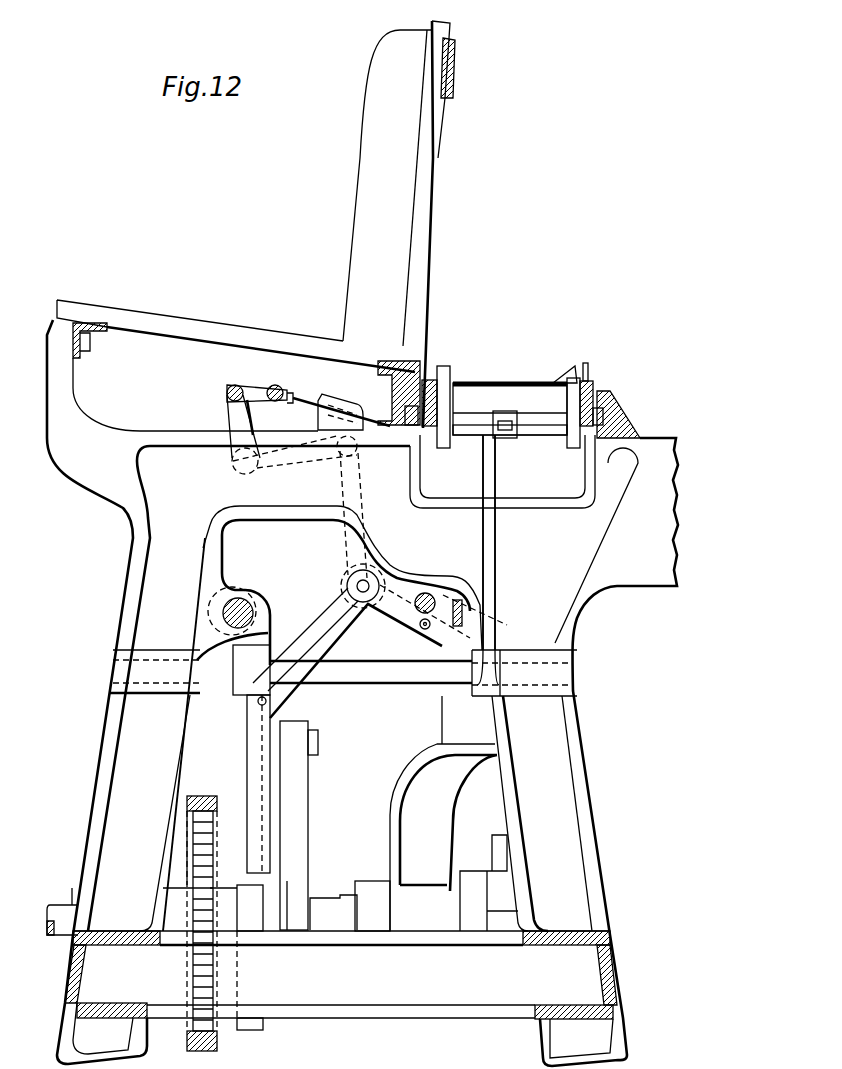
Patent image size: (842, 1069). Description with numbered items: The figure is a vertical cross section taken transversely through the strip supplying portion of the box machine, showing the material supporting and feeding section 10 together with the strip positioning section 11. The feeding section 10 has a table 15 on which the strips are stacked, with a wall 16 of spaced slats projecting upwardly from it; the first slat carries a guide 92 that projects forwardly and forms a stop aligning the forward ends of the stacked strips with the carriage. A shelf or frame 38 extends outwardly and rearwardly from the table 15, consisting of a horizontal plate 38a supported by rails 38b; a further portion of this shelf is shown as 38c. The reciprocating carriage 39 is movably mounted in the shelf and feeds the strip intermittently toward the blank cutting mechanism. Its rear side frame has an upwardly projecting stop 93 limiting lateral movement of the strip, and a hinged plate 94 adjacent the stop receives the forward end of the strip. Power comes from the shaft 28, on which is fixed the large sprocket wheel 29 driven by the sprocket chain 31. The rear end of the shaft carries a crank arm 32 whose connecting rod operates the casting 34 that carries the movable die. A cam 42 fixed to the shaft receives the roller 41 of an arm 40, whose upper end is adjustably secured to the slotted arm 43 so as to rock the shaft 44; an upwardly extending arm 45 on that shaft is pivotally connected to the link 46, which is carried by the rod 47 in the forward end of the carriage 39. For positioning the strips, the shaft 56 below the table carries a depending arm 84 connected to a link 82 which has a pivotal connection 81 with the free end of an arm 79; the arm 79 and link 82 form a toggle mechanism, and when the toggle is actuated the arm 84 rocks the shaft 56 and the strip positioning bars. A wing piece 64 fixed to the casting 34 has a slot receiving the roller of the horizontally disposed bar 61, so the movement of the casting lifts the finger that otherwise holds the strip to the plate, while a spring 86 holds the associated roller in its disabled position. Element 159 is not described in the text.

The material supporting and feeding section 10 is at (217, 310).
The table 15 is at (107, 312).
The wall 16 is at (433, 152).
The guide 92 is at (365, 160).
The shelf or frame 38 is at (456, 375).
The plate 38a is at (505, 367).
The rails 38b is at (410, 442).
The bracket block 38c is at (622, 432).
The reciprocating carriage 39 is at (446, 378).
The strip positioning section 11 is at (512, 375).
The hinged plate 94 is at (562, 380).
The stop 93 is at (588, 378).
The link 46 is at (512, 440).
The rod 47 is at (470, 440).
The upwardly extending arm 45 is at (496, 547).
The casting 34 is at (352, 683).
The link 82 is at (297, 538).
The shaft 56 is at (240, 610).
The pivotal connection 81 is at (350, 583).
The arm 84 is at (232, 680).
The arm 79 is at (390, 610).
The wing piece 64 is at (428, 596).
The spring 86 is at (425, 632).
The horizontally disposed bar 61 is at (464, 610).
The shaft 44 is at (391, 732).
The arm 43 is at (246, 768).
The arm 40 is at (309, 812).
The roller 41 is at (312, 895).
The block 159 is at (378, 925).
The crank arm 32 is at (475, 925).
The cam 42 is at (256, 925).
The large sprocket wheel 29 is at (192, 850).
The sprocket chain 31 is at (186, 802).
The shaft 28 is at (65, 933).